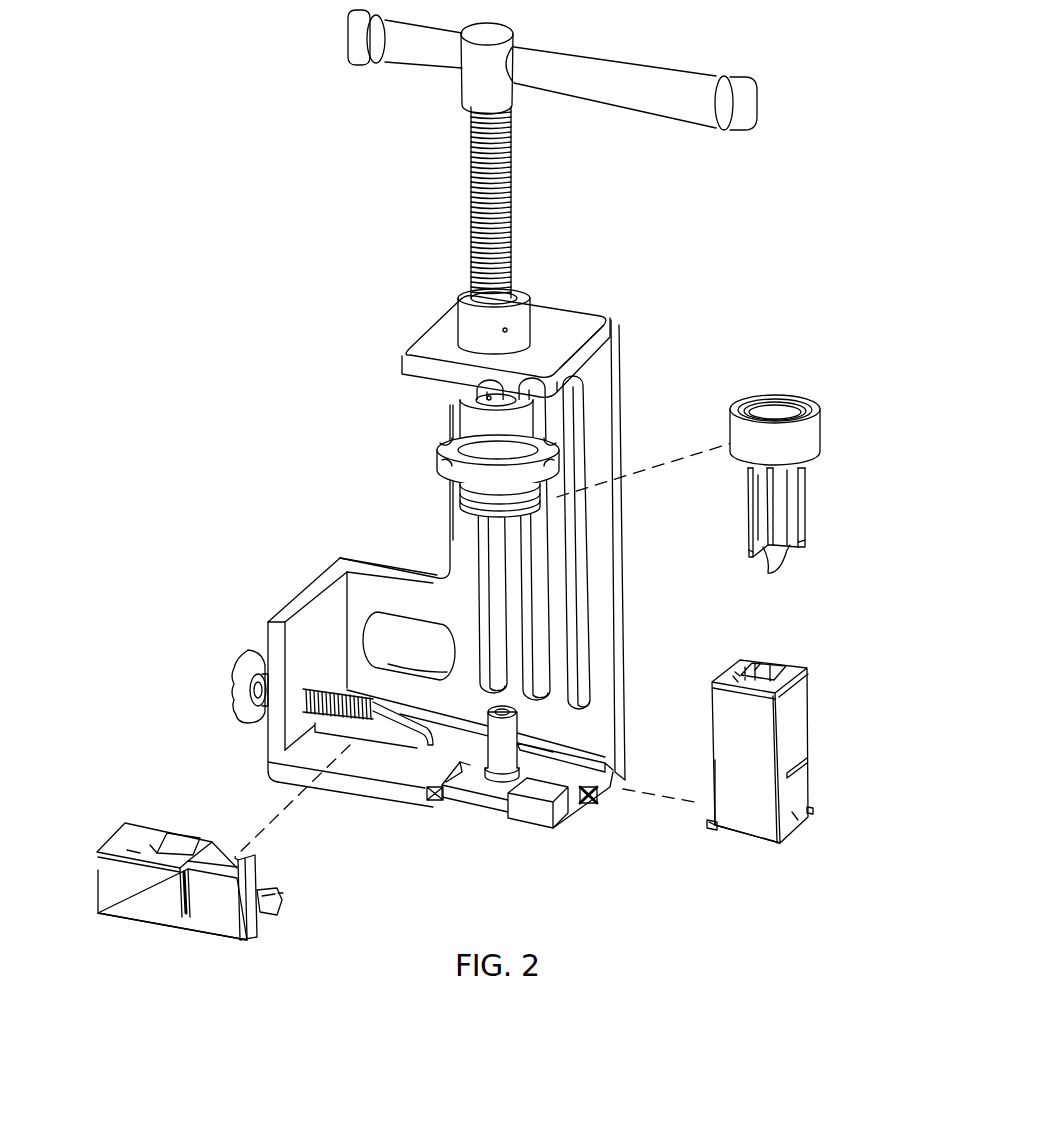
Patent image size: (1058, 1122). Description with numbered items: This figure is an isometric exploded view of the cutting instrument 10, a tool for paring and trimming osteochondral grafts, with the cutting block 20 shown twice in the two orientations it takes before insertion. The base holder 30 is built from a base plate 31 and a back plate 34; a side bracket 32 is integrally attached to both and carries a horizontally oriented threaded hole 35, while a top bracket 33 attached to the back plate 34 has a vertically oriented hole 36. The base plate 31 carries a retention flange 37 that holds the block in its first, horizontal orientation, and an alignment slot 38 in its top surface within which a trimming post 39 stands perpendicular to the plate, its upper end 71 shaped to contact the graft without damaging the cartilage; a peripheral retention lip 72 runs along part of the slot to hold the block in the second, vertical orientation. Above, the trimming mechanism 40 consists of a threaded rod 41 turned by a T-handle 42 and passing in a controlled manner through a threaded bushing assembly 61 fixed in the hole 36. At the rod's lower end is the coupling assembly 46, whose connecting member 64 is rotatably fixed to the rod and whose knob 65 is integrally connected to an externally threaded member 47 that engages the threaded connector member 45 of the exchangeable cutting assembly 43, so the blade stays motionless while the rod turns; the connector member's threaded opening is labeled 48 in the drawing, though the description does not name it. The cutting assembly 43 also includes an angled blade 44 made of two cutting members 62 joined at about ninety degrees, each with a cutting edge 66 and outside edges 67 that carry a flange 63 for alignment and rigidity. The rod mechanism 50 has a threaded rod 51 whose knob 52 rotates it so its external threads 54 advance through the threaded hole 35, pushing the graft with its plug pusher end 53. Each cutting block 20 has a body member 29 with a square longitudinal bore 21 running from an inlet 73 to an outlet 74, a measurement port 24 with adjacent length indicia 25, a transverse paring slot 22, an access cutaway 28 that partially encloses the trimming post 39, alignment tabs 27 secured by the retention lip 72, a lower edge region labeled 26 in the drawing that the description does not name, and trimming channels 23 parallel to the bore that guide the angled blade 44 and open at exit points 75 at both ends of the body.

The cutting instrument 10 is at (256, 251).
The cutting block 20 is at (490, 830).
The longitudinal bore 21 is at (763, 673).
The paring slot 22 is at (800, 768).
The trimming channels 23 is at (735, 680).
The measurement port 24 is at (130, 851).
The length indicia 25 is at (135, 853).
The bottom edge 26 is at (777, 845).
The alignment tabs 27 is at (813, 810).
The access cutaway 28 is at (235, 858).
The body member 29 is at (728, 763).
The base holder 30 is at (286, 659).
The base plate 31 is at (530, 818).
The side bracket 32 is at (306, 651).
The top bracket 33 is at (563, 337).
The back plate 34 is at (615, 392).
The threaded hole 35 is at (303, 688).
The hole 36 is at (457, 342).
The retention flange 37 is at (417, 737).
The alignment slot 38 is at (497, 800).
The trimming post 39 is at (580, 687).
The trimming mechanism 40 is at (582, 248).
The threaded rod 41 is at (508, 182).
The T-handle 42 is at (613, 77).
The cutting assembly 43 is at (797, 447).
The angled blade 44 is at (793, 521).
The threaded connector member 45 is at (800, 404).
The coupling assembly 46 is at (431, 463).
The externally threaded member 47 is at (483, 503).
The threaded opening 48 is at (772, 400).
The rod mechanism 50 is at (277, 699).
The threaded rod 51 is at (306, 592).
The knob 52 is at (237, 675).
The plug pusher end 53 is at (373, 704).
The external threads 54 is at (318, 738).
The threaded bushing assembly 61 is at (523, 322).
The cutting members 62 is at (760, 502).
The flange 63 is at (750, 546).
The connecting member 64 is at (472, 425).
The knob 65 is at (453, 470).
The cutting edge 66 is at (783, 553).
The outside edges 67 is at (750, 478).
The upper end 71 is at (506, 706).
The peripheral retention lip 72 is at (442, 795).
The inlet 73 is at (755, 673).
The outlet 74 is at (213, 845).
The exit points 75 is at (278, 912).